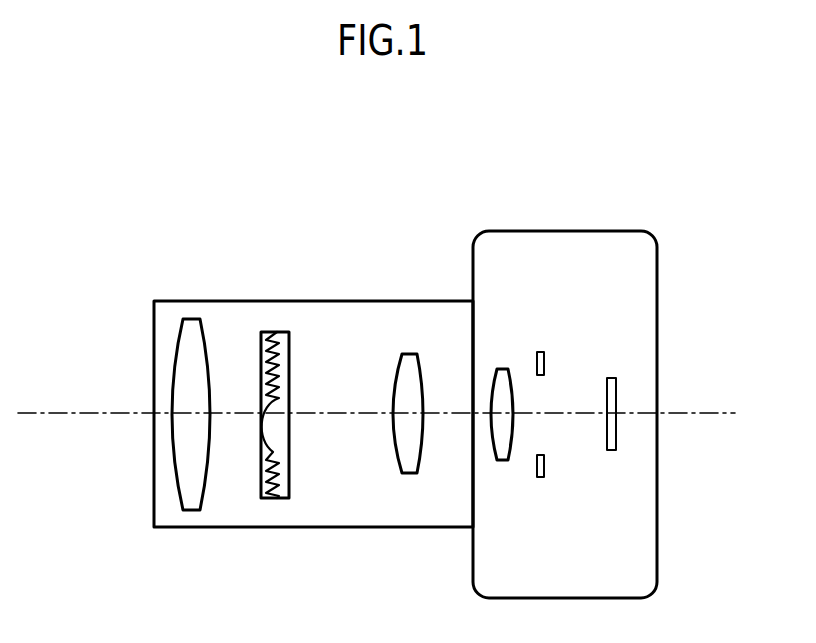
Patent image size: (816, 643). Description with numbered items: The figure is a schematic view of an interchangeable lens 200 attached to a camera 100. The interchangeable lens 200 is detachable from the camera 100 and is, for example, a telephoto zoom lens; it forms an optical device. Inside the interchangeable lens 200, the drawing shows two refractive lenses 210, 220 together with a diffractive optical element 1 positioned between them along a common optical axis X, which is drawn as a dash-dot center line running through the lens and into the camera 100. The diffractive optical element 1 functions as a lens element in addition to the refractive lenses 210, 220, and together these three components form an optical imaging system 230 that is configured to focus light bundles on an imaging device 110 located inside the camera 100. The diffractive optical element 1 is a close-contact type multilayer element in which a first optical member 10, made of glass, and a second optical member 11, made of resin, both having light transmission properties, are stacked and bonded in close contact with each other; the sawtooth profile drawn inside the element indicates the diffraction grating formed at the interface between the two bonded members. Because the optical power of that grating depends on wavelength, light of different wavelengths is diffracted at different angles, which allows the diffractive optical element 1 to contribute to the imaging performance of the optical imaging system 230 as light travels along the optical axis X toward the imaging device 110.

The diffractive optical element 1 is at (275, 406).
The first optical member 10 is at (261, 475).
The second optical member 11 is at (289, 475).
The camera 100 is at (563, 231).
The imaging device 110 is at (615, 397).
The interchangeable lens 200 is at (343, 301).
The refractive lens 210 is at (190, 510).
The refractive lens 220 is at (408, 473).
The optical imaging system 230 is at (363, 353).
The optical axis X is at (53, 411).